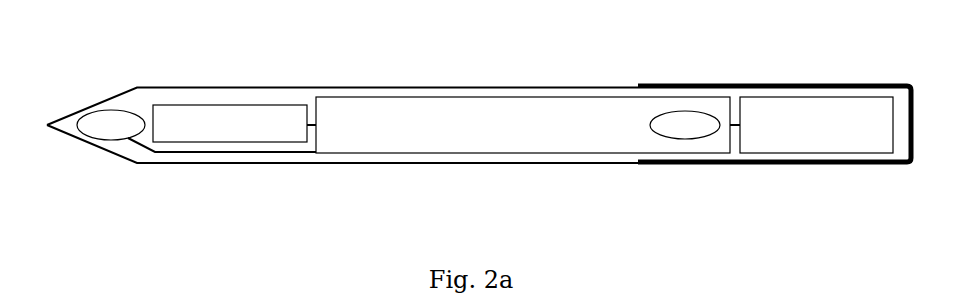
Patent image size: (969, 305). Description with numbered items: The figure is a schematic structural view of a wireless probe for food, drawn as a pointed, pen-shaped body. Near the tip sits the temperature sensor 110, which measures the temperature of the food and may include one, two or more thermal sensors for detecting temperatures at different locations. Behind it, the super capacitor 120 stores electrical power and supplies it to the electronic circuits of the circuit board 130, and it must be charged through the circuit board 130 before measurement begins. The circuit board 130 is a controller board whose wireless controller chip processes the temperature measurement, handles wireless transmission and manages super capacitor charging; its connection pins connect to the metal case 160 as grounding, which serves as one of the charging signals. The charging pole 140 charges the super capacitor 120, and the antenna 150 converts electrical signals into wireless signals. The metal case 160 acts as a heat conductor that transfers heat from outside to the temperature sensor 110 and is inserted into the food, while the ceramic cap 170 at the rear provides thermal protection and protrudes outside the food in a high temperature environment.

The temperature sensor 110 is at (111, 125).
The super capacitor 120 is at (234, 123).
The circuit board 130 is at (528, 125).
The charging pole 140 is at (685, 125).
The antenna 150 is at (816, 125).
The metal case 160 is at (326, 71).
The ceramic cap 170 is at (744, 71).